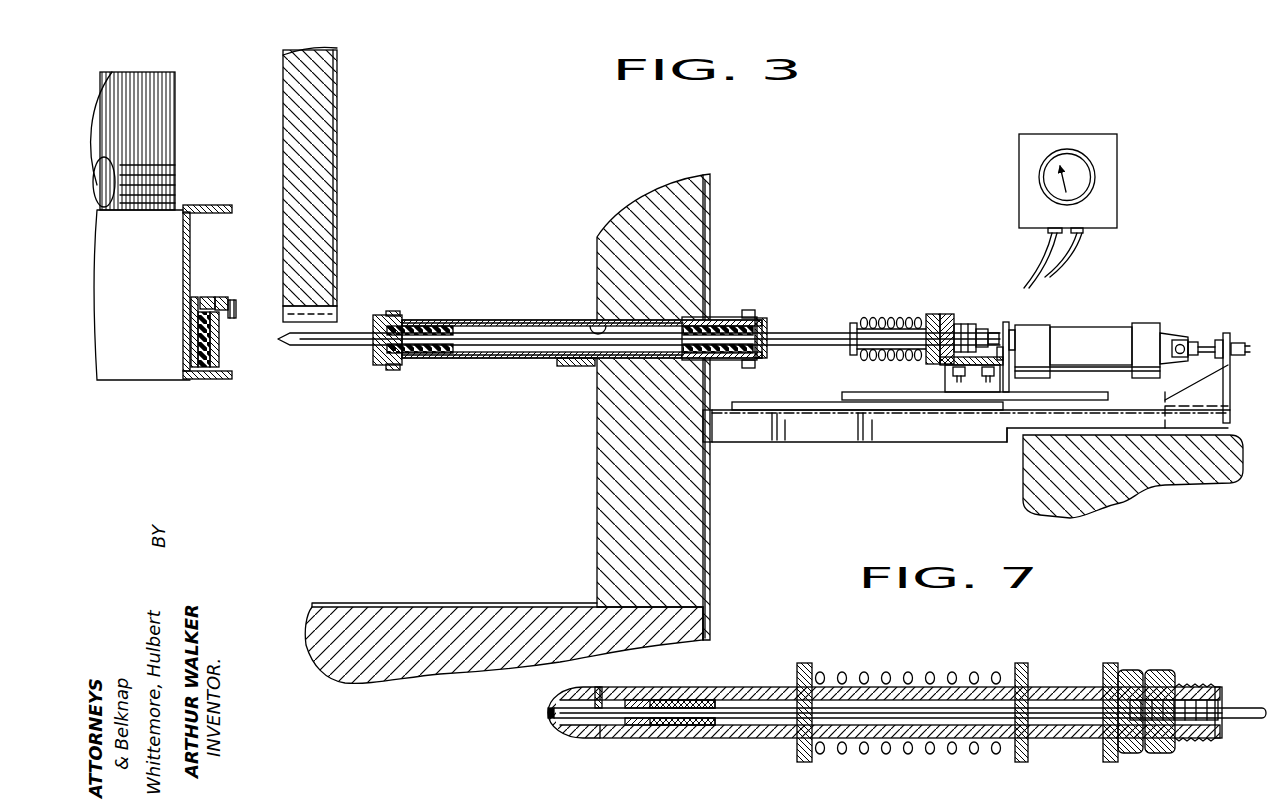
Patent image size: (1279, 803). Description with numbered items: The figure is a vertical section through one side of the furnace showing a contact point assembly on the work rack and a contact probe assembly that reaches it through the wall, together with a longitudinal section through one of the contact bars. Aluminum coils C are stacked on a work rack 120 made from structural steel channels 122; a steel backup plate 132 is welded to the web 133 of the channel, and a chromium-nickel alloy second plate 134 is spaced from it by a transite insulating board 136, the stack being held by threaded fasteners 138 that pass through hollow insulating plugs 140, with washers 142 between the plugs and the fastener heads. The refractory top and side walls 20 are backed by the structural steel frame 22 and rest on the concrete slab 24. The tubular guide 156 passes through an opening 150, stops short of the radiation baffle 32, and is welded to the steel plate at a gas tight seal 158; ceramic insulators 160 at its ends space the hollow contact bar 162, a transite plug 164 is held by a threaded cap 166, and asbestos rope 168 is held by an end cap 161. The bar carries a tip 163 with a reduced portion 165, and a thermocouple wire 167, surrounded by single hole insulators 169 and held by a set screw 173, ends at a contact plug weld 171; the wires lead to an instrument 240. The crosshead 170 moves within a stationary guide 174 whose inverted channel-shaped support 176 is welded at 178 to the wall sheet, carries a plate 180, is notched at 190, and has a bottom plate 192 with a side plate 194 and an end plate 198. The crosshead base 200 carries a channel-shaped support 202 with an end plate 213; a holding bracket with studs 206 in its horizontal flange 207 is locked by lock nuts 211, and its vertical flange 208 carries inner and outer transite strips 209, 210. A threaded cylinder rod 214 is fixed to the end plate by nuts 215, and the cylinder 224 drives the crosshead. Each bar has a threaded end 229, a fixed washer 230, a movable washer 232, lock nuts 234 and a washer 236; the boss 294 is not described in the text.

In FIG. 3, the aluminum coils C is at (163, 117).
In FIG. 3, the top and side walls 20 is at (612, 505).
In FIG. 3, the structural steel frame 22 is at (708, 568).
In FIG. 3, the concrete slab 24 is at (345, 615).
In FIG. 3, the radiation baffle 32 is at (338, 92).
In FIG. 3, the work rack 120 is at (161, 388).
In FIG. 3, the structural steel channels 122 is at (203, 208).
In FIG. 3, the backup plate 132 is at (193, 294).
In FIG. 3, the web 133 is at (192, 243).
In FIG. 3, the second plate 134 is at (210, 295).
In FIG. 3, the insulating board 136 is at (208, 372).
In FIG. 3, the threaded fasteners 138 is at (236, 308).
In FIG. 3, the hollow insulating plugs 140 is at (224, 318).
In FIG. 3, the washers 142 is at (228, 301).
In FIG. 3, the opening 150 is at (595, 325).
In FIG. 3, the tubular element, casing or guide 156 is at (503, 362).
In FIG. 3, the weld 158 is at (710, 318).
In FIG. 3, the insulators 160 is at (422, 358).
In FIG. 3, the end cap 161 is at (744, 311).
In FIG. 3, the contact bar 162 is at (320, 348).
In FIG. 7, the contact bar 162 is at (708, 740).
In FIG. 3, the tip 163 is at (281, 345).
In FIG. 7, the tip 163 is at (555, 735).
In FIG. 3, the plug 164 is at (385, 315).
In FIG. 7, the reduced portion 165 is at (643, 722).
In FIG. 3, the cap 166 is at (390, 372).
In FIG. 3, the thermocouple wire 167 is at (1030, 262).
In FIG. 7, the thermocouple wire 167 is at (585, 700).
In FIG. 3, the asbestos rope 168 is at (765, 318).
In FIG. 7, the single hole insulators 169 is at (707, 702).
In FIG. 3, the crosshead 170 is at (917, 368).
In FIG. 7, the contact plug weld 171 is at (548, 714).
In FIG. 7, the set screw 173 is at (605, 688).
In FIG. 3, the stationary guide 174 is at (870, 467).
In FIG. 3, the inverted channel-shaped support 176 is at (810, 435).
In FIG. 3, the weld 178 is at (710, 442).
In FIG. 3, the plate 180 is at (797, 400).
In FIG. 3, the notch 190 is at (1000, 457).
In FIG. 3, the plate 192 is at (1213, 429).
In FIG. 3, the side plate 194 is at (1197, 392).
In FIG. 3, the end plate 198 is at (1222, 372).
In FIG. 3, the base 200 is at (857, 396).
In FIG. 3, the channel-shaped support 202 is at (940, 383).
In FIG. 3, the threaded mounting studs 206 is at (958, 380).
In FIG. 3, the horizontal flange 207 is at (988, 332).
In FIG. 3, the vertical flange 208 is at (932, 313).
In FIG. 3, the inner transite strip 209 is at (947, 313).
In FIG. 3, the outer transite strip 210 is at (918, 320).
In FIG. 3, the threaded lock nuts 211 is at (984, 380).
In FIG. 3, the end plate 213 is at (1008, 325).
In FIG. 3, the threaded cylinder rod 214 is at (1182, 332).
In FIG. 3, the nuts 215 is at (1216, 338).
In FIG. 3, the cylinder 224 is at (1075, 326).
In FIG. 7, the threaded end 229 is at (1212, 688).
In FIG. 7, the fixed washer 230 is at (804, 668).
In FIG. 7, the movable washer 232 is at (1022, 665).
In FIG. 3, the threaded lock nuts 234 is at (970, 323).
In FIG. 7, the threaded lock nuts 234 is at (1160, 672).
In FIG. 7, the washer 236 is at (1108, 665).
In FIG. 3, the instrument 240 is at (1118, 176).
In FIG. 3, the boss 294 is at (577, 370).